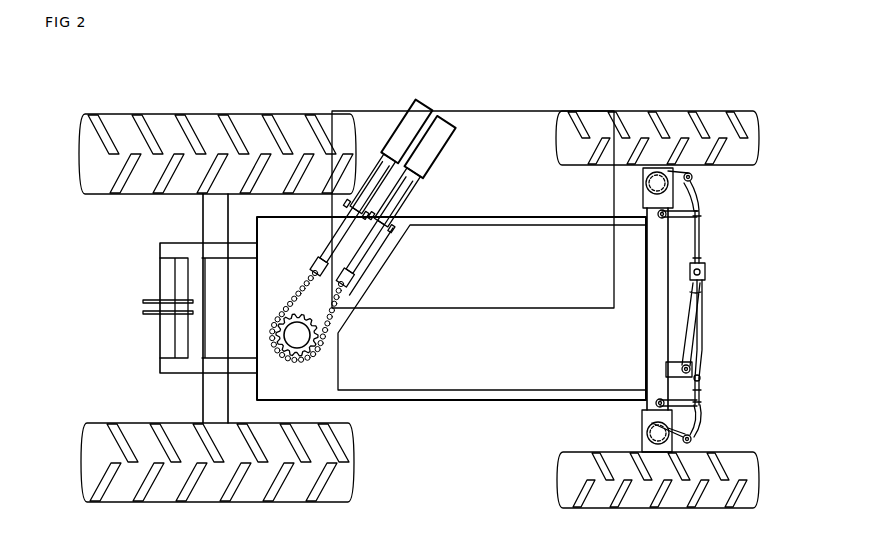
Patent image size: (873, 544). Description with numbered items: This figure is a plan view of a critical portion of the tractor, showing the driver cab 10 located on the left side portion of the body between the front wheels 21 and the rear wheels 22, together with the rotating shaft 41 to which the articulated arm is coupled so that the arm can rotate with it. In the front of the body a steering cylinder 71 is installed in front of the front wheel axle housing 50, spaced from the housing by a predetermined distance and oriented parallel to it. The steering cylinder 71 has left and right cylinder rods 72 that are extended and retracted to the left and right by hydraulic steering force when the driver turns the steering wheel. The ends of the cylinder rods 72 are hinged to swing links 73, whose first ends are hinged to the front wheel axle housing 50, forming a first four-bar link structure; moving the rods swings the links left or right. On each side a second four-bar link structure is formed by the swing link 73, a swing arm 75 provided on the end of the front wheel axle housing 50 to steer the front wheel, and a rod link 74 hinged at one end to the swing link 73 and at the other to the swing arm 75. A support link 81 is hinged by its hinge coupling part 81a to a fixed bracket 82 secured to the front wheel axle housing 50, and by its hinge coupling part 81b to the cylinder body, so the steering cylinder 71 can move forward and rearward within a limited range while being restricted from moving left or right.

The driver cab 10 is at (486, 136).
The front wheels 21 is at (634, 120).
The rear wheels 22 is at (204, 122).
The rotating shaft 41 is at (275, 333).
The front wheel axle housing 50 is at (655, 295).
The steering cylinder 71 is at (704, 312).
The cylinder rods 72 is at (707, 242).
The swing links 73 is at (676, 214).
The rod link 74 is at (705, 204).
The swing arm 75 is at (674, 172).
The support link 81 is at (690, 339).
The hinge coupling part 81a is at (702, 380).
The hinge coupling part 81b is at (706, 272).
The fixed bracket 82 is at (665, 368).